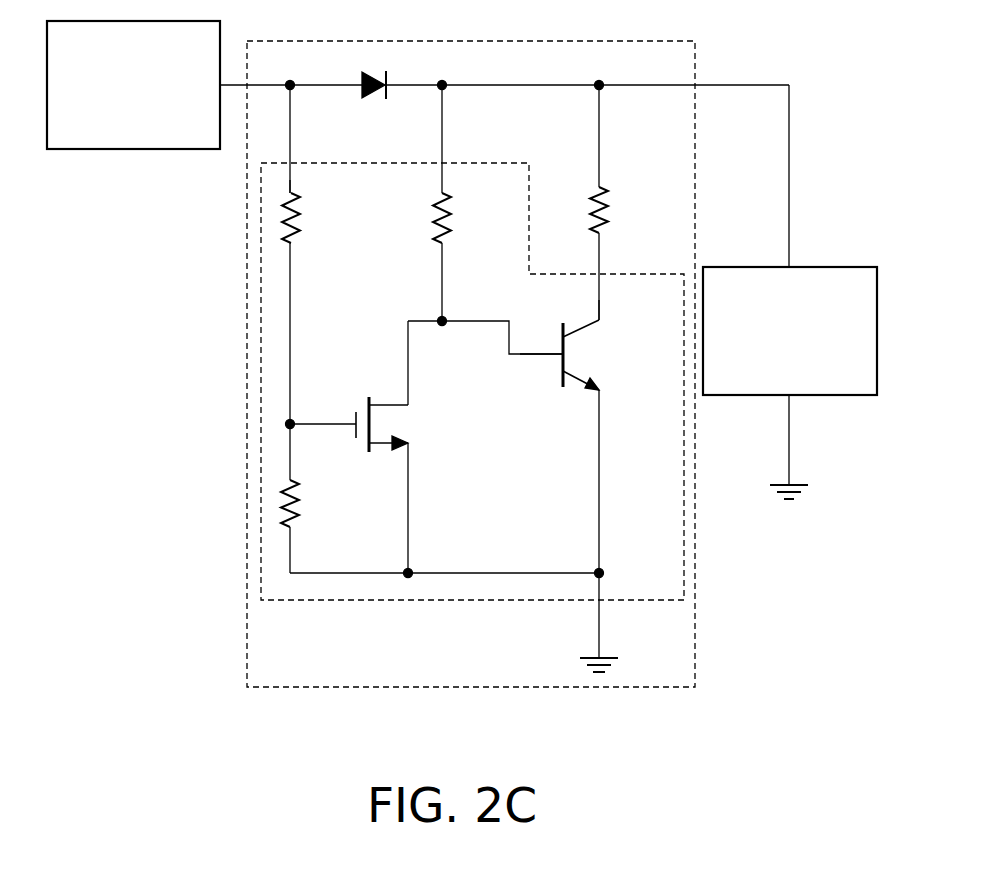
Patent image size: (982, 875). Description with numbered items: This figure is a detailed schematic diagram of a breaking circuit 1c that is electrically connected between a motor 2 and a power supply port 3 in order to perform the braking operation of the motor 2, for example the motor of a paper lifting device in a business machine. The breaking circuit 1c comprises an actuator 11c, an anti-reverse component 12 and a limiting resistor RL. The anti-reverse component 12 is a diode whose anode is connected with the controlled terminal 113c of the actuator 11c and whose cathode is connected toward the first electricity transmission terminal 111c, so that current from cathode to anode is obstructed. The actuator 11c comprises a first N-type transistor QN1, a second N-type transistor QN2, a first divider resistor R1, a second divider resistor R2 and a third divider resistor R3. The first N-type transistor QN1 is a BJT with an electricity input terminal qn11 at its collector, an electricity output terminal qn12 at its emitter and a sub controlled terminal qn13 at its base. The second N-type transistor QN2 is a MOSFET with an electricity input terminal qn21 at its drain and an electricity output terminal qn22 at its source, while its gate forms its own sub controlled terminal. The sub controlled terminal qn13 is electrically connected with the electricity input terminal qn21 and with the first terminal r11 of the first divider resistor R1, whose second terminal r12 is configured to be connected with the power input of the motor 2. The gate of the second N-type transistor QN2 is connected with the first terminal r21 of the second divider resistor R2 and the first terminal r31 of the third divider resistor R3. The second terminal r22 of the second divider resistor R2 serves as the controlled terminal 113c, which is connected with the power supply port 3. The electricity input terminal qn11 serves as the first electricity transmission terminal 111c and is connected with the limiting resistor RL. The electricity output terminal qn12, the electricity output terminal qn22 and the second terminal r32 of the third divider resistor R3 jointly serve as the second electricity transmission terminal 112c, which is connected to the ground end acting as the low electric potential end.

The breaking circuit 1c is at (696, 69).
The motor 2 is at (783, 364).
The power supply port 3 is at (126, 131).
The anti-reverse component 12 is at (384, 73).
The actuator 11c is at (650, 274).
The first electricity transmission terminal 111c is at (599, 274).
The second electricity transmission terminal 112c is at (599, 600).
The controlled terminal 113c is at (291, 163).
The first divider resistor R1 is at (462, 218).
The first terminal of first divider resistor r11 is at (444, 258).
The second terminal of first divider resistor r12 is at (444, 183).
The second divider resistor R2 is at (311, 218).
The first terminal of second divider resistor r21 is at (292, 258).
The second terminal of second divider resistor r22 is at (292, 183).
The third divider resistor R3 is at (311, 503).
The first terminal of third divider resistor r31 is at (292, 467).
The second terminal of third divider resistor r32 is at (292, 540).
The limiting resistor RL is at (615, 159).
The first N-type transistor QN1 is at (609, 355).
The electricity input terminal of first N-type transistor qn11 is at (600, 303).
The electricity output terminal of first N-type transistor qn12 is at (600, 407).
The sub controlled terminal of first N-type transistor qn13 is at (533, 354).
The second N-type transistor QN2 is at (374, 424).
The electricity input terminal of second N-type transistor qn21 is at (409, 390).
The electricity output terminal of second N-type transistor qn22 is at (409, 460).